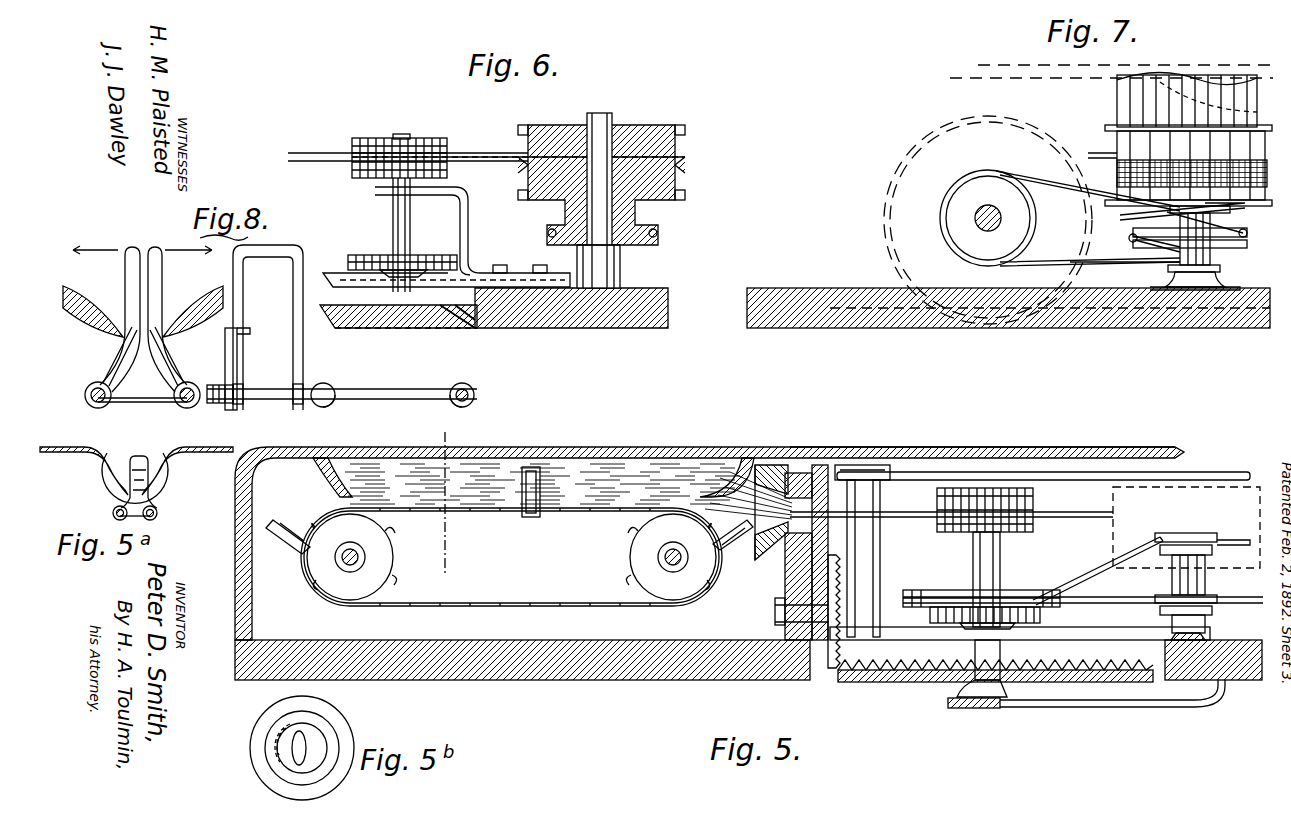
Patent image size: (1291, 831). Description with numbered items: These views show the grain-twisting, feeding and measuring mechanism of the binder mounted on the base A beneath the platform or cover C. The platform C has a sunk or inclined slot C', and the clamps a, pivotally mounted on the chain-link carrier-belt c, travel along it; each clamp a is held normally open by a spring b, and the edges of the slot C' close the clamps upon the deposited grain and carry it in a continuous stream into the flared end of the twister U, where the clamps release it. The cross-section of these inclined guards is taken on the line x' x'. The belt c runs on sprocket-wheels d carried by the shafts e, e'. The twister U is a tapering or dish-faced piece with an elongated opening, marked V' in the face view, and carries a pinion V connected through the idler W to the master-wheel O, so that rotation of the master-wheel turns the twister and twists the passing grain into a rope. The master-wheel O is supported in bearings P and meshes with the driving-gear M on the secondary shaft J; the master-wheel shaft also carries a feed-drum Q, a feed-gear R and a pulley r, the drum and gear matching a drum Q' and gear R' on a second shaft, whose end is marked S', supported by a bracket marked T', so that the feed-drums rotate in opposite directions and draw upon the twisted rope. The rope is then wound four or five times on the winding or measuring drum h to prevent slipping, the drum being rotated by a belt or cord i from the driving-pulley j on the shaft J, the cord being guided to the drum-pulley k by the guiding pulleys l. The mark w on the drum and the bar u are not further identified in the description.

In FIG. 5, the base A is at (683, 636).
In FIG. 6, the base A is at (670, 318).
In FIG. 7, the base A is at (803, 290).
In FIG. 5, the platform C is at (982, 436).
In FIG. 5A, the platform C is at (136, 460).
In FIG. 5, the inclined slot C' is at (552, 472).
In FIG. 5A, the inclined slot C' is at (135, 472).
In FIG. 8, the inclined slot C' is at (143, 309).
In FIG. 5, the clamps a is at (284, 521).
In FIG. 8, the clamps a is at (125, 262).
In FIG. 5, the spring b is at (520, 500).
In FIG. 8, the spring b is at (108, 370).
In FIG. 5, the carrier-belt c is at (482, 517).
In FIG. 8, the carrier-belt c is at (85, 396).
In FIG. 5, the sprocket-wheels d is at (511, 557).
In FIG. 5, the shaft e is at (341, 557).
In FIG. 5, the shaft e' is at (684, 559).
In FIG. 5, the section line x' is at (454, 499).
In FIG. 5, the twister U is at (775, 548).
In FIG. 5B, the twister U is at (258, 758).
In FIG. 5, the pinion V is at (1011, 552).
In FIG. 5, the delivery opening V' is at (951, 521).
In FIG. 5B, the delivery opening V' is at (325, 739).
In FIG. 5, the idler W is at (841, 597).
In FIG. 5, the guide rod u is at (1220, 480).
In FIG. 7, the guide rod u is at (1216, 67).
In FIG. 5, the drum-pulley k is at (1186, 527).
In FIG. 6, the drum-pulley k is at (650, 247).
In FIG. 7, the drum-pulley k is at (1238, 250).
In FIG. 5, the feed-drum Q is at (1081, 598).
In FIG. 6, the feed-drum Q' is at (486, 147).
In FIG. 5, the feed-gear R is at (990, 610).
In FIG. 6, the gear R' is at (402, 256).
In FIG. 5, the pulley r is at (1028, 592).
In FIG. 5, the bearings P is at (1083, 596).
In FIG. 5, the master-wheel O is at (1083, 668).
In FIG. 6, the master-wheel O is at (392, 330).
In FIG. 7, the master-wheel O is at (835, 328).
In FIG. 6, the pin S' is at (412, 126).
In FIG. 6, the bracket T' is at (446, 235).
In FIG. 6, the winding-drum h is at (688, 144).
In FIG. 7, the winding-drum h is at (1110, 136).
In FIG. 6, the connecting cord i is at (662, 236).
In FIG. 7, the connecting cord i is at (1100, 265).
In FIG. 7, the driving-pulley j is at (977, 218).
In FIG. 7, the secondary shaft J is at (1060, 218).
In FIG. 7, the guiding pulleys l is at (1155, 225).
In FIG. 7, the driving-gear M is at (900, 285).
In FIG. 7, the section line w is at (1257, 104).